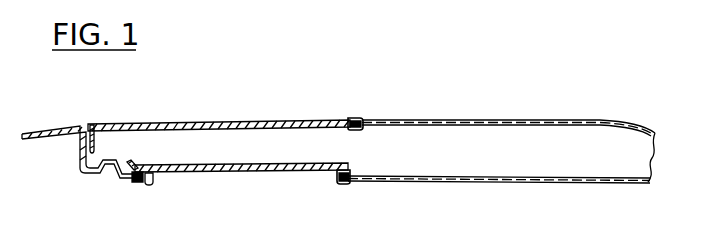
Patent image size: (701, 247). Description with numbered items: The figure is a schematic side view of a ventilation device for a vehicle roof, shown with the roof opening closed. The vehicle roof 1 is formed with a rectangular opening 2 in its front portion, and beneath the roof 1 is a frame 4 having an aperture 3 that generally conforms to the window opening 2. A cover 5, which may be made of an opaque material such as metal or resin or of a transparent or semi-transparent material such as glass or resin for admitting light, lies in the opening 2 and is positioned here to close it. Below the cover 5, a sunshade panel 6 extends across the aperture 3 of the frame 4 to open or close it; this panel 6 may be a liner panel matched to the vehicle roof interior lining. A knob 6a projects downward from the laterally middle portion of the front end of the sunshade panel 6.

The vehicle roof 1 is at (490, 120).
The rectangular opening 2 is at (352, 118).
The aperture 3 is at (337, 184).
The frame 4 is at (108, 173).
The cover 5 is at (267, 123).
The sunshade panel 6 is at (257, 170).
The knob 6a is at (148, 185).